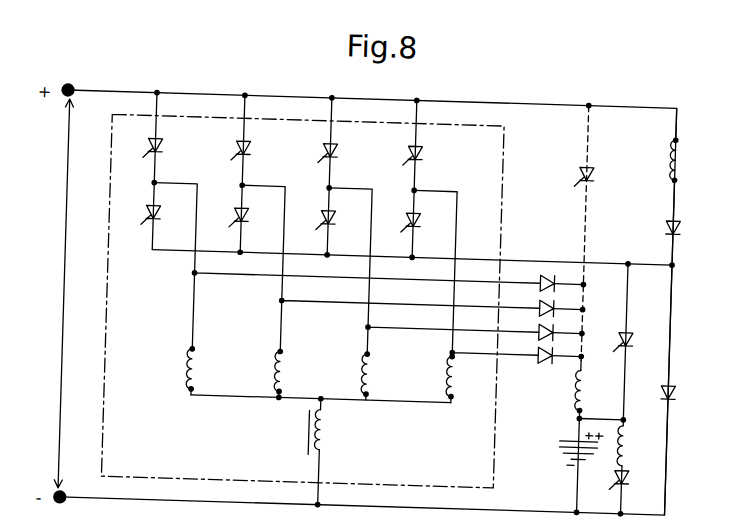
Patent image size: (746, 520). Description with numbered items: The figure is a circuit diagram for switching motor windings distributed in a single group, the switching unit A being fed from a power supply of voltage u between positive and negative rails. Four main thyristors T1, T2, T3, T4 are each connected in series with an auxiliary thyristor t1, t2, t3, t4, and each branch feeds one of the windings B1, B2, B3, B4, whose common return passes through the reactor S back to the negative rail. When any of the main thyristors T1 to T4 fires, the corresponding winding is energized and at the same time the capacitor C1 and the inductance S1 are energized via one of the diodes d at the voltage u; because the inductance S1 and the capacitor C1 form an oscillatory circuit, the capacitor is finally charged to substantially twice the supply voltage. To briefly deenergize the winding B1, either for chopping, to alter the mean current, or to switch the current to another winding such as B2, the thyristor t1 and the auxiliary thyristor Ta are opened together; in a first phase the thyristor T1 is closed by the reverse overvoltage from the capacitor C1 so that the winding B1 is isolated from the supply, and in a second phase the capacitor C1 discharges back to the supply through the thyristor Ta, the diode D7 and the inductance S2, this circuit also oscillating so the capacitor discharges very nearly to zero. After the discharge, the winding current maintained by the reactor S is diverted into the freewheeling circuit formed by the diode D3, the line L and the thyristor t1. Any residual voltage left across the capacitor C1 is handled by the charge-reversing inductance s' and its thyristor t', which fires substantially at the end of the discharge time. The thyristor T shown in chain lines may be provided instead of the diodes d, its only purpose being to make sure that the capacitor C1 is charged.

The supply voltage u is at (52, 293).
The inverter unit A is at (105, 202).
The line L is at (547, 245).
The thyristor T1 is at (163, 146).
The thyristor T2 is at (251, 146).
The thyristor T3 is at (338, 146).
The thyristor T4 is at (423, 146).
The thyristor t1 is at (148, 220).
The thyristor t2 is at (236, 218).
The thyristor t3 is at (323, 218).
The thyristor t4 is at (410, 218).
The winding B1 is at (182, 370).
The winding B2 is at (272, 372).
The winding B3 is at (360, 370).
The winding B4 is at (446, 374).
The reactor S is at (307, 443).
The diode d is at (542, 290).
The thyristor T is at (578, 153).
The inductance S1 is at (578, 382).
The capacitor C1 is at (560, 450).
The auxiliary thyristor Ta is at (640, 327).
The charge-reversing inductance s' is at (635, 449).
The thyristor t' is at (630, 493).
The inductance S2 is at (671, 147).
The diode D7 is at (684, 212).
The diode D3 is at (684, 377).